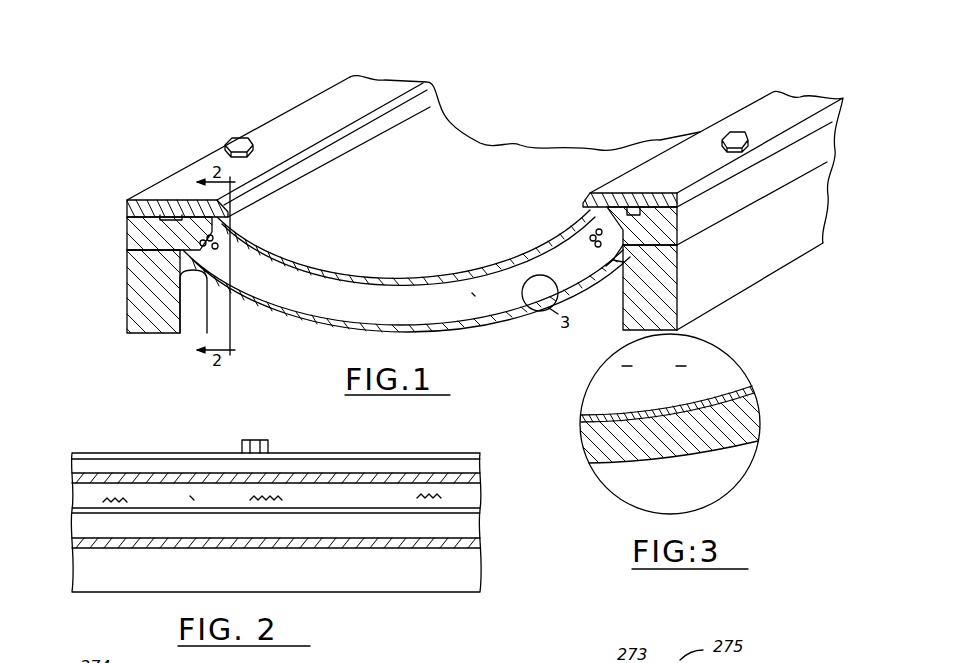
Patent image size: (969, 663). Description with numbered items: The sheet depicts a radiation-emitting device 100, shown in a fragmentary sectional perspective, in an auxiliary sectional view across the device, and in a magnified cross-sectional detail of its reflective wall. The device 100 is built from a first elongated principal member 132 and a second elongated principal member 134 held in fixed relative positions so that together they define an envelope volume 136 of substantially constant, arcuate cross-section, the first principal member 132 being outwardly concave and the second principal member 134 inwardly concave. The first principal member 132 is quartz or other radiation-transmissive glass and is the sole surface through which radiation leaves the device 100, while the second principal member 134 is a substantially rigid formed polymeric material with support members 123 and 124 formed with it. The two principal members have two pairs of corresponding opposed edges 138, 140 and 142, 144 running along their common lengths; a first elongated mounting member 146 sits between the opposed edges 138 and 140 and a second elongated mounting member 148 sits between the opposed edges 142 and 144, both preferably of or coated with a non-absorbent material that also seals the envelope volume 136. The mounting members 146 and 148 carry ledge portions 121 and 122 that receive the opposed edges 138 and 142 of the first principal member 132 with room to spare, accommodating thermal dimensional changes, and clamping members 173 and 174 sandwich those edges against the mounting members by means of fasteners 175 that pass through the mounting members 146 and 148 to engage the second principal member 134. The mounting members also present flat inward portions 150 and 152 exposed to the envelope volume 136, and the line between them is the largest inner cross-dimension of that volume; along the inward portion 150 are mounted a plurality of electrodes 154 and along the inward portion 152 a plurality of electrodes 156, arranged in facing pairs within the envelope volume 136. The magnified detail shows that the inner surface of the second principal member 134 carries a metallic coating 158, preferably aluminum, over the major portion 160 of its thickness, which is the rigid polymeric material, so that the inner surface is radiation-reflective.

In FIG. 1, the radiation-emitting device 100 is at (282, 92).
In FIG. 2, the radiation-emitting device 100 is at (298, 442).
In FIG. 1, the ledge portion 121 is at (643, 210).
In FIG. 1, the ledge portion 122 is at (163, 207).
In FIG. 1, the support member 123 is at (653, 303).
In FIG. 1, the support member 124 is at (140, 303).
In FIG. 1, the first elongated principal member 132 is at (405, 165).
In FIG. 2, the first elongated principal member 132 is at (138, 478).
In FIG. 1, the second elongated principal member 134 is at (360, 327).
In FIG. 3, the second elongated principal member 134 is at (763, 398).
In FIG. 2, the second elongated principal member 134 is at (413, 547).
In FIG. 1, the envelope volume 136 is at (472, 293).
In FIG. 3, the envelope volume 136 is at (654, 365).
In FIG. 1, the opposed edge 138 is at (617, 200).
In FIG. 1, the opposed edge 140 is at (627, 247).
In FIG. 1, the opposed edge 142 is at (187, 213).
In FIG. 1, the opposed edge 144 is at (180, 258).
In FIG. 1, the first elongated mounting member 146 is at (653, 230).
In FIG. 1, the second elongated mounting member 148 is at (153, 240).
In FIG. 1, the inward portion 150 is at (613, 260).
In FIG. 1, the inward portion 152 is at (207, 273).
In FIG. 2, the inward portion 152 is at (192, 498).
In FIG. 1, the electrodes 154 is at (597, 242).
In FIG. 1, the electrodes 156 is at (250, 245).
In FIG. 2, the electrodes 156 is at (112, 504).
In FIG. 3, the metallic coating 158 is at (677, 402).
In FIG. 3, the major portion 160 is at (712, 430).
In FIG. 1, the clamping member 173 is at (785, 105).
In FIG. 1, the clamping member 174 is at (345, 100).
In FIG. 1, the fastener 175 is at (233, 137).
In FIG. 2, the fastener 175 is at (262, 441).